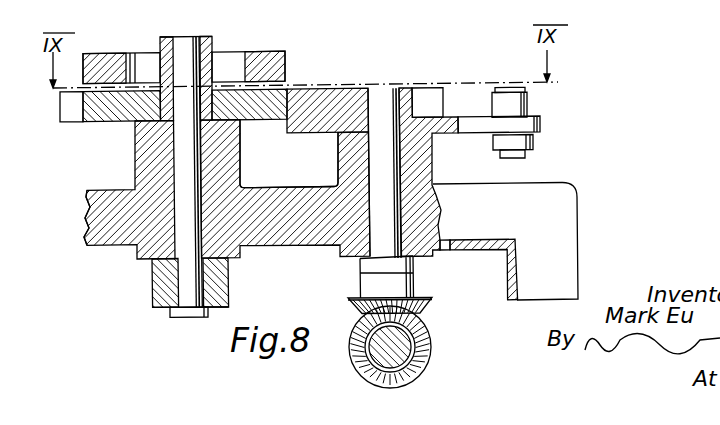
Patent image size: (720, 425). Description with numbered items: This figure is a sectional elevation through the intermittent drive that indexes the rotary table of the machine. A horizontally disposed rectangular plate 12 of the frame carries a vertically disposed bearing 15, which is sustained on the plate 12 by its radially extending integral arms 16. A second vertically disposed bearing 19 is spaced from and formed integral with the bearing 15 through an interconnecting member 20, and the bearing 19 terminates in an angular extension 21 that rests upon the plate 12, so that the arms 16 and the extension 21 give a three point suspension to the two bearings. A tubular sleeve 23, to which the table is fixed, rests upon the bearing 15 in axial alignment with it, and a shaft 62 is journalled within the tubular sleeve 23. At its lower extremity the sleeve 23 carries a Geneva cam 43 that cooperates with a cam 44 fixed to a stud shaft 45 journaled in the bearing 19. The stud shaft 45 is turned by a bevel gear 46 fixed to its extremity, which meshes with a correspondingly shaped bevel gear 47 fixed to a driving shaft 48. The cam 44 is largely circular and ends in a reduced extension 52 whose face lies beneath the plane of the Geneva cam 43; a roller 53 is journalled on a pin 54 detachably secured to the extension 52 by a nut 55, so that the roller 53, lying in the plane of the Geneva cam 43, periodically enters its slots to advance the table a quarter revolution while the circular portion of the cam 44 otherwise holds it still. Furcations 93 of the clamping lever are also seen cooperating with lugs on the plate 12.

The rectangular plate 12 is at (507, 277).
The bearing 15 is at (148, 163).
The arms 16 is at (103, 212).
The bearing 19 is at (433, 161).
The interconnecting member 20 is at (310, 200).
The angular extension 21 is at (552, 230).
The tubular sleeve 23 is at (208, 50).
The Geneva cam 43 is at (267, 103).
The cam 44 is at (330, 108).
The stud shaft 45 is at (380, 105).
The bevel gear 46 is at (425, 308).
The bevel gear 47 is at (433, 352).
The driving shaft 48 is at (352, 323).
The reduced extension 52 is at (467, 122).
The roller 53 is at (530, 105).
The pin 54 is at (505, 88).
The nut 55 is at (535, 142).
The shaft 62 is at (178, 50).
The furcations 93 is at (122, 32).